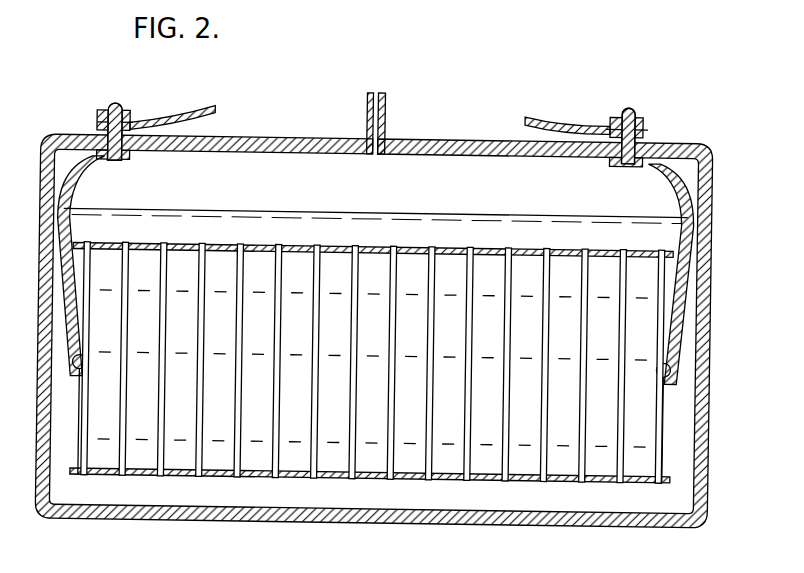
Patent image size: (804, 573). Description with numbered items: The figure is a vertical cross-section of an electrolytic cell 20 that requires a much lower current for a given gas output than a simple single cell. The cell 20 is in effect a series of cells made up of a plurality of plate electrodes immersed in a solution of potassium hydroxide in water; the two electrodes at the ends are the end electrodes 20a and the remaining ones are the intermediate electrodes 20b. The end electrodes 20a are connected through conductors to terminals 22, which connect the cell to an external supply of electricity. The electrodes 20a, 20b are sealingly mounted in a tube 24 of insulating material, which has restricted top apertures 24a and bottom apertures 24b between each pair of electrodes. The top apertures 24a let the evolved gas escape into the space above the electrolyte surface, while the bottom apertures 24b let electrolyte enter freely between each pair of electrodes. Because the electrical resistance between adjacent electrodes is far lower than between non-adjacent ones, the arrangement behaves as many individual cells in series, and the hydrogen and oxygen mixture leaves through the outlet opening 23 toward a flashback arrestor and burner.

The electrolytic cell 20 is at (255, 136).
The end electrodes 20a is at (663, 409).
The intermediate electrodes 20b is at (464, 282).
The terminals 22 is at (119, 109).
The outlet opening 23 is at (382, 108).
The tube of insulating material 24 is at (425, 479).
The top apertures 24a is at (217, 245).
The bottom apertures 24b is at (292, 478).